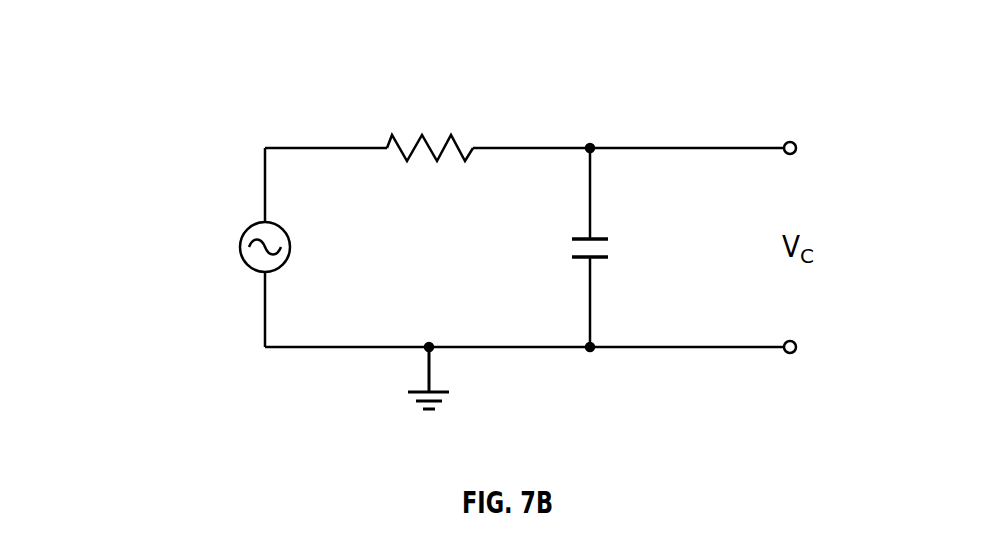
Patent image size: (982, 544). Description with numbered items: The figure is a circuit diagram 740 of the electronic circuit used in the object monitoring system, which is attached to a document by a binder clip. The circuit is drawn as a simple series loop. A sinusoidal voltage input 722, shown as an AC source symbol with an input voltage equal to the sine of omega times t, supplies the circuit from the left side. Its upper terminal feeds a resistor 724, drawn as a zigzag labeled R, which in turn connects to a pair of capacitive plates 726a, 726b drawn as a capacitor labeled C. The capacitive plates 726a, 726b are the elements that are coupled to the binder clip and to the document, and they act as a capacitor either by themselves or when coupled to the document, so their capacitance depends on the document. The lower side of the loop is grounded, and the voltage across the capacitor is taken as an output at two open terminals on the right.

The circuit diagram 740 is at (254, 76).
The resistor 724 is at (393, 137).
The sinusoidal voltage input 722 is at (293, 248).
The capacitive plate 726a is at (602, 237).
The capacitive plate 726b is at (602, 258).